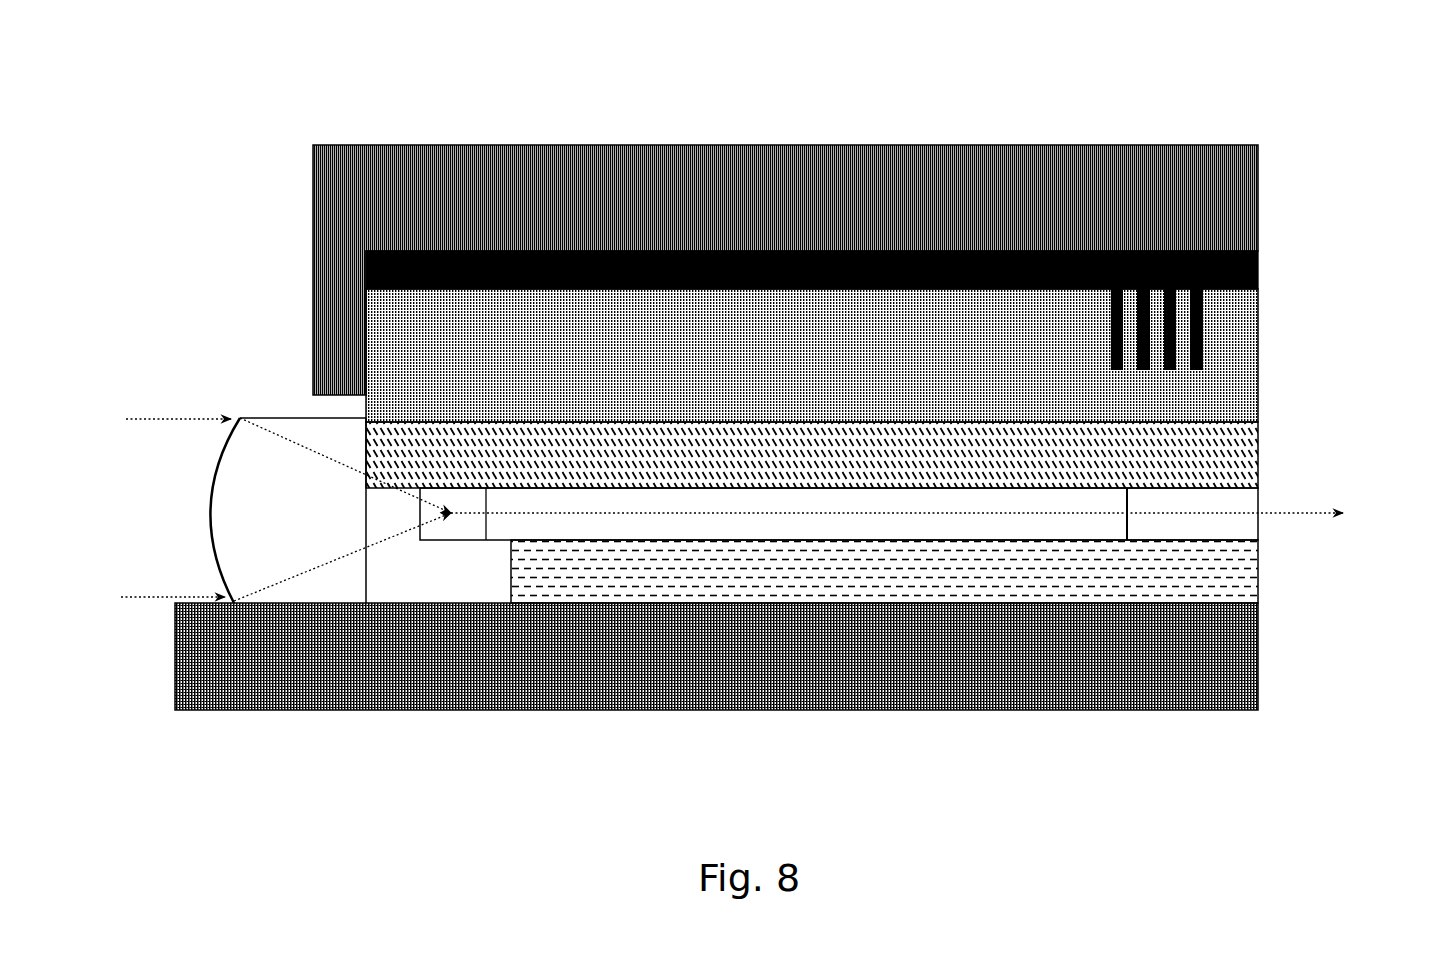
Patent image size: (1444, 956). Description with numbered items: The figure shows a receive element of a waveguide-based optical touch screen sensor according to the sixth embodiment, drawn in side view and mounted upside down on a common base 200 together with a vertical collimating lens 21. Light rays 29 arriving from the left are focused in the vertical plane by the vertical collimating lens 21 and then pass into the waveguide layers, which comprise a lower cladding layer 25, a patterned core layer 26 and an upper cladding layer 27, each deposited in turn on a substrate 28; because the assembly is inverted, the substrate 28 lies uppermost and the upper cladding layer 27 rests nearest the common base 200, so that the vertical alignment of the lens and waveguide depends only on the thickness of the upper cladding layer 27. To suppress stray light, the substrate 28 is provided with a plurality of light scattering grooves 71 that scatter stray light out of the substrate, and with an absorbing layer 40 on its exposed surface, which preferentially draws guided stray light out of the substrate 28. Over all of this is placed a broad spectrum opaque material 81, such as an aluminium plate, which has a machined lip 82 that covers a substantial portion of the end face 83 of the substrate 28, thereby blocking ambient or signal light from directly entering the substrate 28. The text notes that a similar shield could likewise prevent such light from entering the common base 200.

The common base 200 is at (1258, 655).
The broad spectrum opaque material 81 is at (802, 132).
The coating 40 is at (1258, 266).
The substrate 28 is at (1258, 370).
The grooves 71 is at (1203, 313).
The machined lip 82 is at (288, 257).
The end face 83 is at (358, 353).
The lower cladding layer 25 is at (1262, 438).
The patterned core layer 26 is at (1270, 493).
The upper cladding layer 27 is at (1260, 577).
The vertical collimating lens 21 is at (187, 483).
The light rays 29 is at (713, 509).